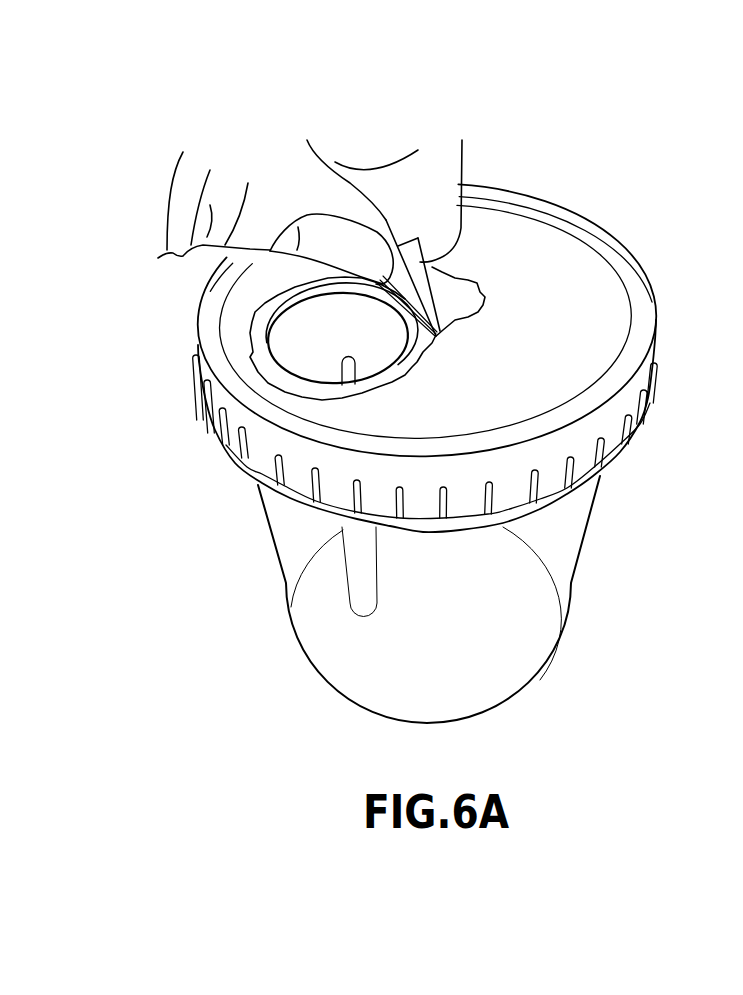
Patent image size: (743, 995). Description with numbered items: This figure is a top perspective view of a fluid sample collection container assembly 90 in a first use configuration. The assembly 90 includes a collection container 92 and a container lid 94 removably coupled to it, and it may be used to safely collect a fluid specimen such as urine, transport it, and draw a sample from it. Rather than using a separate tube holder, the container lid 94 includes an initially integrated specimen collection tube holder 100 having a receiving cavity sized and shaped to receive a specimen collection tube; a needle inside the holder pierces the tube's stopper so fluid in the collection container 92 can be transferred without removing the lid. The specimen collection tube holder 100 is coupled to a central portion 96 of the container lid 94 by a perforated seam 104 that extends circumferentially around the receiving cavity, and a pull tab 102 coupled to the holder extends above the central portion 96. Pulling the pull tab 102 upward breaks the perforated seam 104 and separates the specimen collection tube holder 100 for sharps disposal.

The fluid sample collection container assembly 90 is at (642, 227).
The collection container 92 is at (540, 623).
The container lid 94 is at (655, 410).
The central portion 96 is at (549, 329).
The specimen collection tube holder 100 is at (282, 345).
The pull tab 102 is at (425, 265).
The perforated seam 104 is at (423, 372).